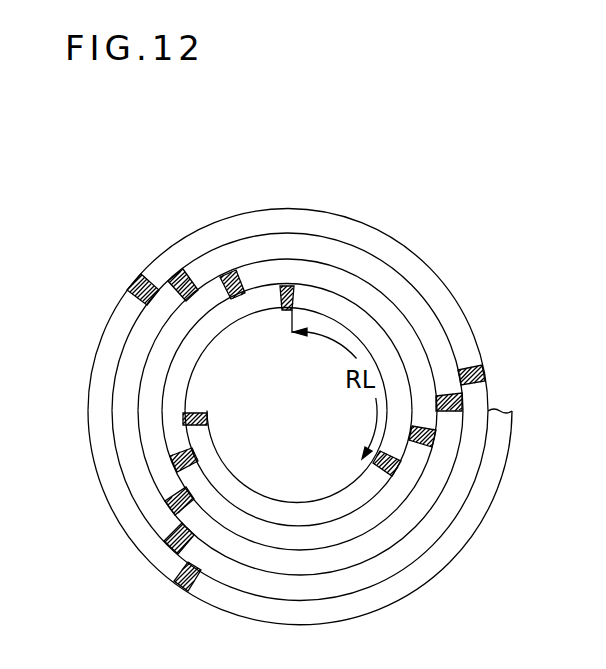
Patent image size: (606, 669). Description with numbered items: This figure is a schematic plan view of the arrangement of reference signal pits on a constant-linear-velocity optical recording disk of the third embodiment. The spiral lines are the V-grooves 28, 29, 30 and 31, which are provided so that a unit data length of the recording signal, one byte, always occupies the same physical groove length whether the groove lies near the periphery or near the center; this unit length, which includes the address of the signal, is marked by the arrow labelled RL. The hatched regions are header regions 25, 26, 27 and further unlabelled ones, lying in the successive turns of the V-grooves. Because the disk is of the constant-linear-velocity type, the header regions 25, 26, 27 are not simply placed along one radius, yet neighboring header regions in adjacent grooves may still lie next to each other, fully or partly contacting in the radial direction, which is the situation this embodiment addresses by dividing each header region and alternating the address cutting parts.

The header region 25 is at (287, 286).
The spacer block 26 is at (230, 273).
The spacer block 27 is at (177, 273).
The V-groove 28 is at (365, 323).
The V-groove 29 is at (355, 285).
The V-groove 30 is at (347, 257).
The V-groove 31 is at (337, 228).